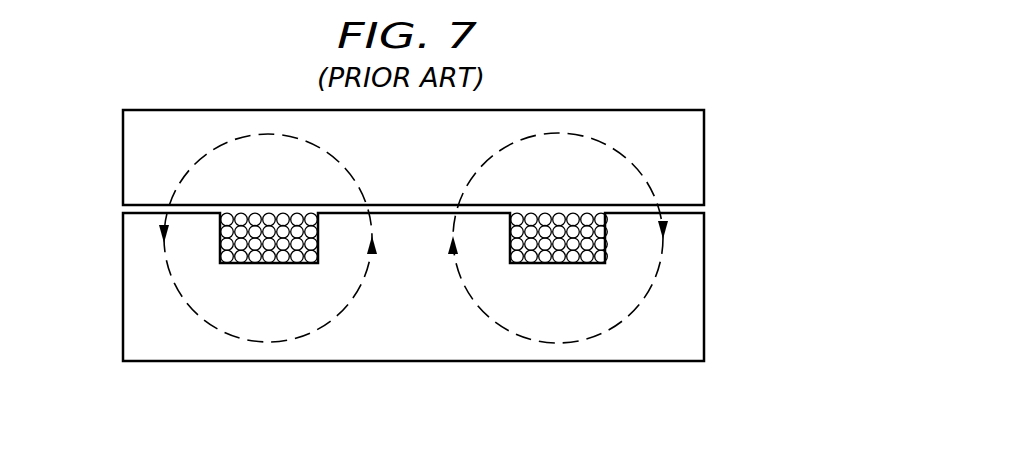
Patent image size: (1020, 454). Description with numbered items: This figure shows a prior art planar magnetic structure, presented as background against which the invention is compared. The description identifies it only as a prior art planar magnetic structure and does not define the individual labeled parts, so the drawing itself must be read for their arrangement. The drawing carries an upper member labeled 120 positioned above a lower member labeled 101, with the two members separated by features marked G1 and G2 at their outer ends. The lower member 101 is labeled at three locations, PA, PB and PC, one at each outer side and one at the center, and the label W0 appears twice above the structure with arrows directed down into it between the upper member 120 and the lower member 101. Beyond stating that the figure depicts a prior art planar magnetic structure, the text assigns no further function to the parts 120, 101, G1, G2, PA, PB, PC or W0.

The upper pole piece / top bar 120 is at (676, 110).
The E-core 101 is at (704, 320).
The first gap G1 is at (108, 203).
The second gap G2 is at (720, 199).
The pole A PA is at (133, 237).
The pole B PB is at (692, 235).
The center pole C PC is at (425, 263).
The write field W0 is at (623, 72).